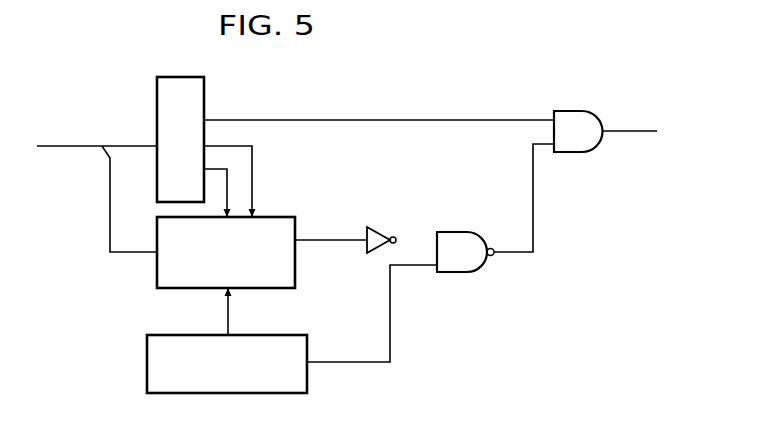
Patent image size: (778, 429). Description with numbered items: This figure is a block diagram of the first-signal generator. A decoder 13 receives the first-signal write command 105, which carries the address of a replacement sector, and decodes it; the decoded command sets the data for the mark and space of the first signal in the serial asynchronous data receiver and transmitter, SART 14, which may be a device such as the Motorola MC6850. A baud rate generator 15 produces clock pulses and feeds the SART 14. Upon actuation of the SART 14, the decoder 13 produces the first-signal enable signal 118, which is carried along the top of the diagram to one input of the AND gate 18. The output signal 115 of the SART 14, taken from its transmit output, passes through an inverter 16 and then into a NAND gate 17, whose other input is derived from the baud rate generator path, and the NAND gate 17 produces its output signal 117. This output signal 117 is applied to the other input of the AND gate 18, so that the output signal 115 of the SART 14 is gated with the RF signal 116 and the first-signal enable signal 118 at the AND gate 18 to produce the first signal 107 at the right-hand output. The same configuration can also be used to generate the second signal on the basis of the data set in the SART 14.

The decoder 13 is at (207, 78).
The serial asynchronous data receiver and transmitter (SART) 14 is at (282, 216).
The baud rate generator 15 is at (147, 363).
The inverter 16 is at (375, 226).
The NAND gate 17 is at (453, 231).
The AND gate 18 is at (573, 110).
The first-signal write command 105 is at (67, 146).
The first signal 107 is at (633, 130).
The output signal of the SART 115 is at (327, 239).
The RF signal 116 is at (343, 361).
The output signal of the NAND gate 117 is at (510, 255).
The first-signal enable signal 118 is at (430, 119).